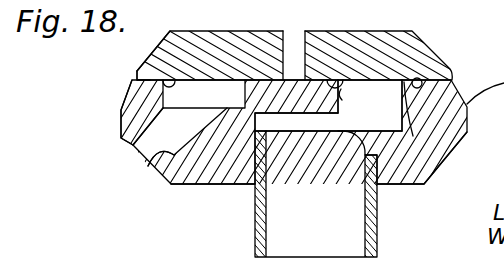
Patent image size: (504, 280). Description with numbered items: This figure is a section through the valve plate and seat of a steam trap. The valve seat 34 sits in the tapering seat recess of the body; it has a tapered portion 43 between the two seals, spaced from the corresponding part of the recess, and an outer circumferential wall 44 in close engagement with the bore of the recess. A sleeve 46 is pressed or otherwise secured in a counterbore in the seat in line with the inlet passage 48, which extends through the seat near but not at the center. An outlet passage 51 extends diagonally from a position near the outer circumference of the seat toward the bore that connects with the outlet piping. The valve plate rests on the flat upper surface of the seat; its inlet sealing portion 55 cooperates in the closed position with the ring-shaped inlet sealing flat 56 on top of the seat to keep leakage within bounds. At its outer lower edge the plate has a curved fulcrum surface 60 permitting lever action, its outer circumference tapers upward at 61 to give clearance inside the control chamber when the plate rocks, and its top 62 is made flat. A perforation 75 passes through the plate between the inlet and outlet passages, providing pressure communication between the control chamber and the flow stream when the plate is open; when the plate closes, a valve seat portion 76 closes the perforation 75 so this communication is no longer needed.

The valve seat 34 is at (200, 186).
The tapered portion 43 is at (449, 153).
The outer circumferential wall 44 is at (121, 124).
The sleeve 46 is at (268, 204).
The inlet passage 48 is at (402, 98).
The outlet passage 51 is at (148, 166).
The inlet sealing portion 55 is at (370, 105).
The inlet sealing flat 56 is at (424, 184).
The fulcrum surface 60 is at (138, 76).
The tapered outer circumference 61 is at (143, 62).
The top of the valve plate 62 is at (379, 31).
The perforation 75 is at (300, 31).
The valve seat portion 76 is at (293, 114).